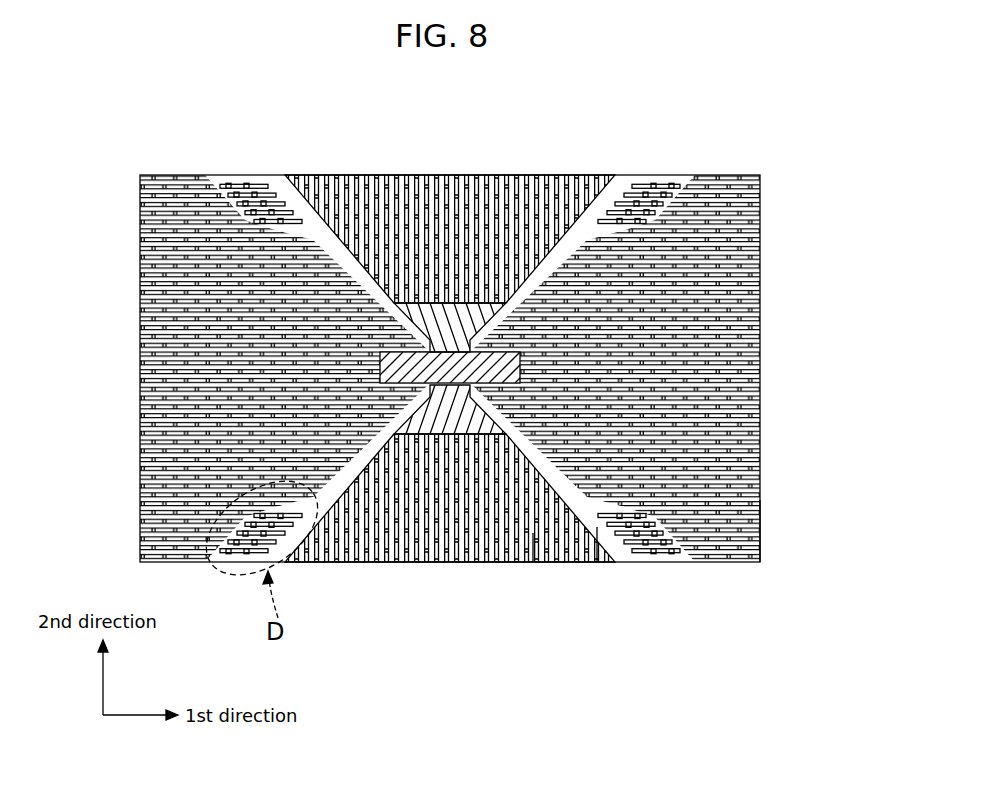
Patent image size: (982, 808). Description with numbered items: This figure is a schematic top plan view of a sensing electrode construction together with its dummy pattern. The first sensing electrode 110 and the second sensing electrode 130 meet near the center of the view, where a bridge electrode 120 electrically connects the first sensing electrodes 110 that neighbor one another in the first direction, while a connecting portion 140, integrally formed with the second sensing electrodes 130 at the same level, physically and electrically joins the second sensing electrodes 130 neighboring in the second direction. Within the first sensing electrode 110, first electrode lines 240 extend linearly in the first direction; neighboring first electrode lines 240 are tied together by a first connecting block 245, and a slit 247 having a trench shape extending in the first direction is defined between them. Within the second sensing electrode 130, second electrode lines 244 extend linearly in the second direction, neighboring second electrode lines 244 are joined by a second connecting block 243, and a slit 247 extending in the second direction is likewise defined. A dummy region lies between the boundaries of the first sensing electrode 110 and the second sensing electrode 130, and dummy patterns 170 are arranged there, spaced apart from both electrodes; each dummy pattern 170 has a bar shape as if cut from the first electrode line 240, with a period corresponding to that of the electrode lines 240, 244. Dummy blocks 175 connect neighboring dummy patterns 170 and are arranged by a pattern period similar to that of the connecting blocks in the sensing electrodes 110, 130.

The first sensing electrode 110 is at (137, 175).
The bridge electrode 120 is at (412, 374).
The second sensing electrode 130 is at (620, 168).
The connecting portion 140 is at (487, 317).
The dummy pattern 170 is at (286, 529).
The dummy block 175 is at (240, 498).
The first electrode line 240 is at (707, 556).
The second connecting block 243 is at (455, 553).
The second electrode line 244 is at (597, 527).
The first connecting block 245 is at (760, 550).
The slit 247 is at (533, 533).